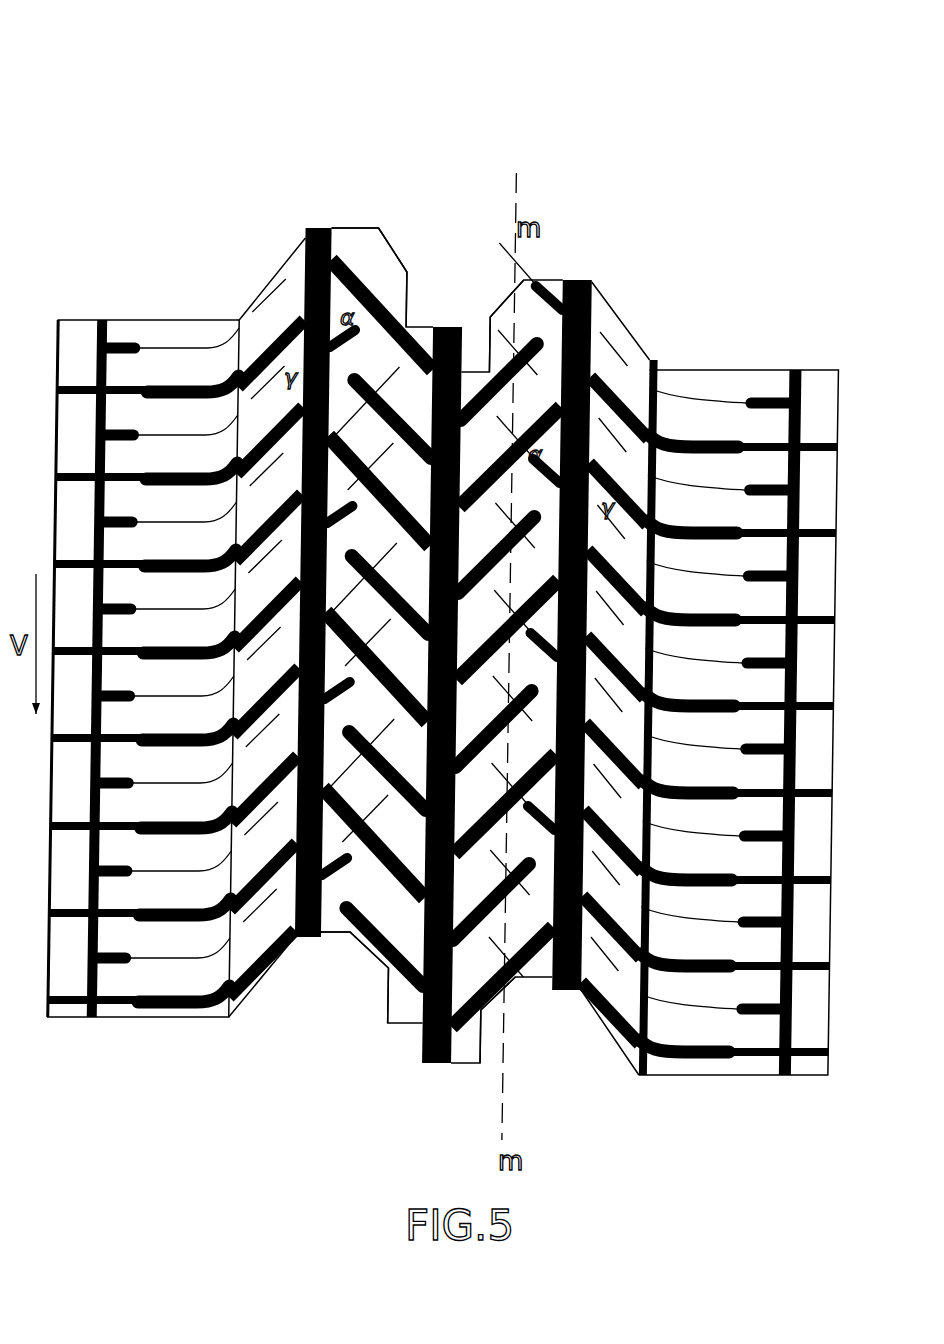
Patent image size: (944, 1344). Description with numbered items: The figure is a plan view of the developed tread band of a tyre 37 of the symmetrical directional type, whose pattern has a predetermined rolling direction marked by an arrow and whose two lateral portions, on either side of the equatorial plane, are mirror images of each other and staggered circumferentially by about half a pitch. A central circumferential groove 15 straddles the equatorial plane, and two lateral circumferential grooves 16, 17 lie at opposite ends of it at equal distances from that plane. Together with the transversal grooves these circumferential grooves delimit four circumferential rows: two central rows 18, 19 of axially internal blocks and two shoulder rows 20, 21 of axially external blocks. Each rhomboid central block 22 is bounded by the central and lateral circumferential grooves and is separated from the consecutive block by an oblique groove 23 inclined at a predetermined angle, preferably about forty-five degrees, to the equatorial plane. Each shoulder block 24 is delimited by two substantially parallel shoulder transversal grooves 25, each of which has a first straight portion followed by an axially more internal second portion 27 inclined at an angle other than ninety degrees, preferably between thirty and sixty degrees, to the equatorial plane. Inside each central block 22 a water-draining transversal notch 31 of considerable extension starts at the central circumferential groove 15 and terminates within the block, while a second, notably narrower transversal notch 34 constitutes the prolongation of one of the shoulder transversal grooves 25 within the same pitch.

The tyre 37 is at (543, 166).
The lateral circumferential groove 16 is at (326, 228).
The central row of blocks 18 is at (381, 350).
The central circumferential groove 15 is at (446, 325).
The central row of blocks 19 is at (529, 318).
The lateral circumferential groove 17 is at (582, 278).
The shoulder row of blocks 20 is at (157, 334).
The shoulder row of blocks 21 is at (741, 380).
The transversal notch 31 is at (387, 418).
The second transversal notch 34 is at (343, 527).
The oblique groove 23 is at (345, 621).
The shoulder block 24 is at (727, 658).
The central block 22 is at (344, 754).
The second portion of shoulder transversal groove 27 is at (262, 968).
The shoulder transversal groove 25 is at (157, 1003).